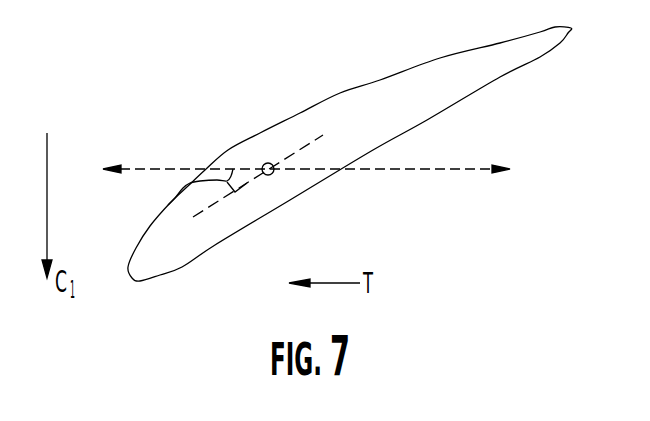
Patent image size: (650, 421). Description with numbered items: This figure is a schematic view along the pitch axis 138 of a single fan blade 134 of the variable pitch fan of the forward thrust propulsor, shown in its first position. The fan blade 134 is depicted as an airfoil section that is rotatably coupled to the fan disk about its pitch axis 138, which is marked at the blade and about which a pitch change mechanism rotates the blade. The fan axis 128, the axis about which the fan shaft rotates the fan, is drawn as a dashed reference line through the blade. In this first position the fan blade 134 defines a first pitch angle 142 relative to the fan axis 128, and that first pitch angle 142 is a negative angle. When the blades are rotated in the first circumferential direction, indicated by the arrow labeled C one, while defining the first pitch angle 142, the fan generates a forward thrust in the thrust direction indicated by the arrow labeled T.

The fan axis 128 is at (395, 172).
The fan blade 134 is at (229, 149).
The pitch axis 138 is at (271, 175).
The first pitch angle 142 is at (166, 205).